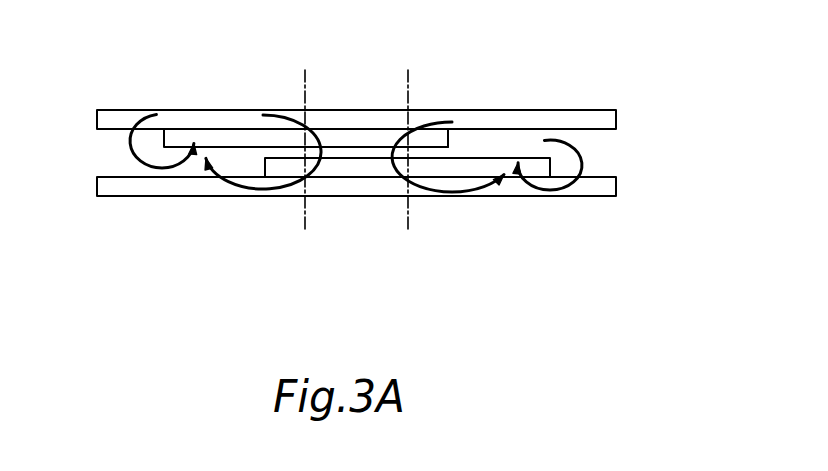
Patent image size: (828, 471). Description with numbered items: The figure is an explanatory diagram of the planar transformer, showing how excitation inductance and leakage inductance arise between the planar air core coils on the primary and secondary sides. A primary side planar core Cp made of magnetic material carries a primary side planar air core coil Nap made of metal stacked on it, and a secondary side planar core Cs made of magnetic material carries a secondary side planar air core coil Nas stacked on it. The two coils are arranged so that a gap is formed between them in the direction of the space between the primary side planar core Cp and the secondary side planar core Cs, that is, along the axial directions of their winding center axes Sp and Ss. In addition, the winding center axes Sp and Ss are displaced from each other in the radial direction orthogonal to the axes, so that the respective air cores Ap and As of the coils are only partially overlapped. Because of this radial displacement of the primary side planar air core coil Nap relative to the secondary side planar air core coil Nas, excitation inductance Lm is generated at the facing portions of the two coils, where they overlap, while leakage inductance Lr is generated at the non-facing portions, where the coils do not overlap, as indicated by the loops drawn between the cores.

The primary side planar core Cp is at (617, 118).
The secondary side planar core Cs is at (617, 190).
The air core Ap is at (222, 140).
The air core As is at (322, 173).
The primary side planar air core coil Nap is at (448, 141).
The secondary side planar air core coil Nas is at (368, 168).
The winding center axis Sp is at (306, 88).
The winding center axis Ss is at (409, 88).
The excitation inductance Lm is at (228, 193).
The leakage inductance Lr is at (126, 150).